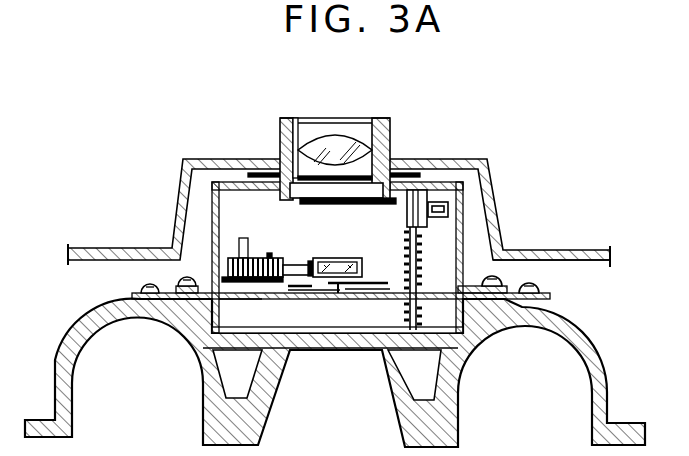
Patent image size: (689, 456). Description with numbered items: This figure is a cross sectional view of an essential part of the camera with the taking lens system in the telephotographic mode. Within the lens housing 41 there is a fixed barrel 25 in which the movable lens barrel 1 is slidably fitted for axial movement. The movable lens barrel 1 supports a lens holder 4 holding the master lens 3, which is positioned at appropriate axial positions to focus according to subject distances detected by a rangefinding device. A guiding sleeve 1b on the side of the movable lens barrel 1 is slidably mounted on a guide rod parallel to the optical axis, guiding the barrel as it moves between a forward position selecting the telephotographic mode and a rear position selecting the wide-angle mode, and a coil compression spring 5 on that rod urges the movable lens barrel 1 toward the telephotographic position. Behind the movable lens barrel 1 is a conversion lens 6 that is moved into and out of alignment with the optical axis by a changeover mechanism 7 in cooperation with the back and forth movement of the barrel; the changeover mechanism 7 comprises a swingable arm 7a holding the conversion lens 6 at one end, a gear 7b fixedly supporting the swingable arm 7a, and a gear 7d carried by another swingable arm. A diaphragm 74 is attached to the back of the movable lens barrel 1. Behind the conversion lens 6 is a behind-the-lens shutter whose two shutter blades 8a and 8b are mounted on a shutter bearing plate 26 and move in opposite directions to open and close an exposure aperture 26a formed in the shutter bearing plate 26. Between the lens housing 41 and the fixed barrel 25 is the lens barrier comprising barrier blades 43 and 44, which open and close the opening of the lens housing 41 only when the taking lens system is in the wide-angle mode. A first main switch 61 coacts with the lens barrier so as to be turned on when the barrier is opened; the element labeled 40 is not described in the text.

The movable lens barrel 1 is at (288, 125).
The guiding sleeve 1b is at (428, 216).
The master lens 3 is at (340, 140).
The lens holder 4 is at (378, 118).
The coil compression spring 5 is at (428, 270).
The conversion lens 6 is at (338, 258).
The changeover mechanism 7 is at (316, 260).
The swingable arm 7a is at (297, 265).
The gear 7b is at (278, 258).
The gear 7d is at (238, 258).
The shutter blade 8a is at (297, 291).
The shutter blade 8b is at (380, 290).
The fixed barrel 25 is at (210, 205).
The shutter bearing plate 26 is at (445, 308).
The exposure aperture 26a is at (328, 300).
The flange 40 is at (572, 250).
The lens housing 41 is at (465, 160).
The barrier blade 43 is at (412, 174).
The barrier blade 44 is at (265, 173).
The first main switch 61 is at (233, 300).
The diaphragm 74 is at (358, 205).